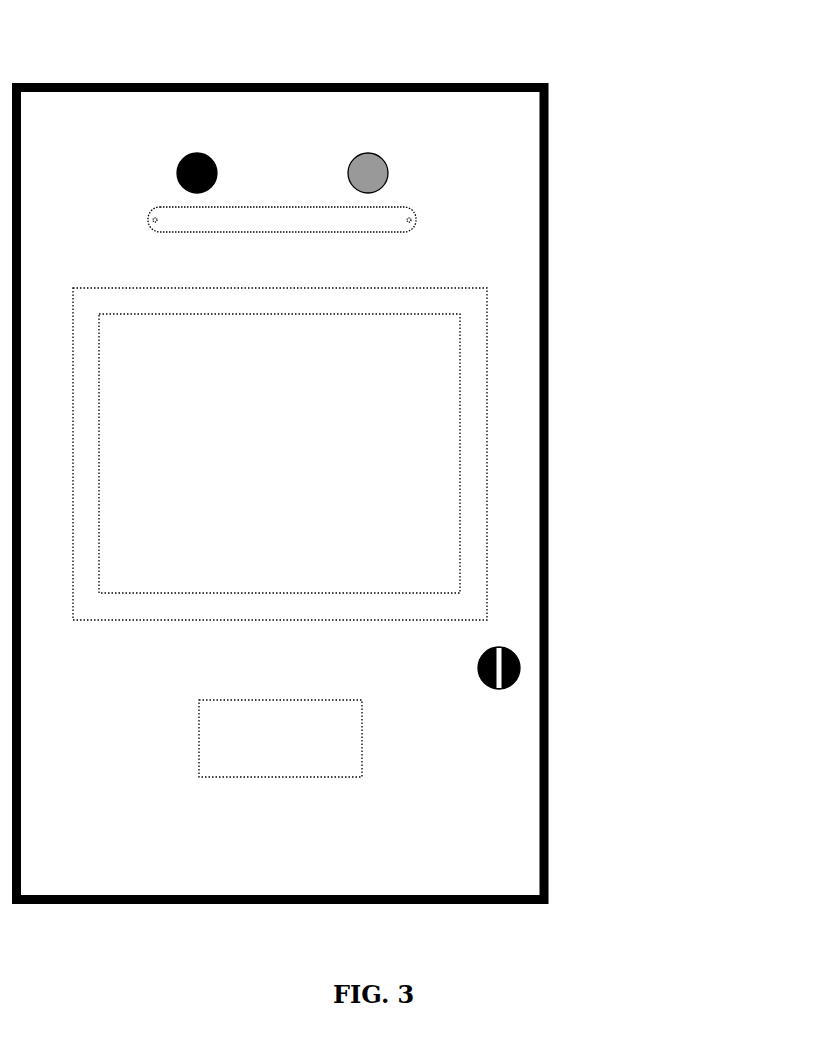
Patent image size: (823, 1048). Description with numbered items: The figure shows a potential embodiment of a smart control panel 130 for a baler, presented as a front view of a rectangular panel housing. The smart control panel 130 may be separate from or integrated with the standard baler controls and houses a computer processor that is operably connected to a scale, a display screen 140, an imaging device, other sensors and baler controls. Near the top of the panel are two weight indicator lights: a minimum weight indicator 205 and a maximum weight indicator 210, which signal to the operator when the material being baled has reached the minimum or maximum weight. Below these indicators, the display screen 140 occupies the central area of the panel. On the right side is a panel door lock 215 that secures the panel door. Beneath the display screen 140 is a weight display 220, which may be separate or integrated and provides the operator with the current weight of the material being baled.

The smart control panel 130 is at (643, 278).
The minimum weight indicator 205 is at (219, 151).
The maximum weight indicator 210 is at (397, 160).
The display screen 140 is at (280, 454).
The panel door lock 215 is at (502, 697).
The weight display 220 is at (280, 738).